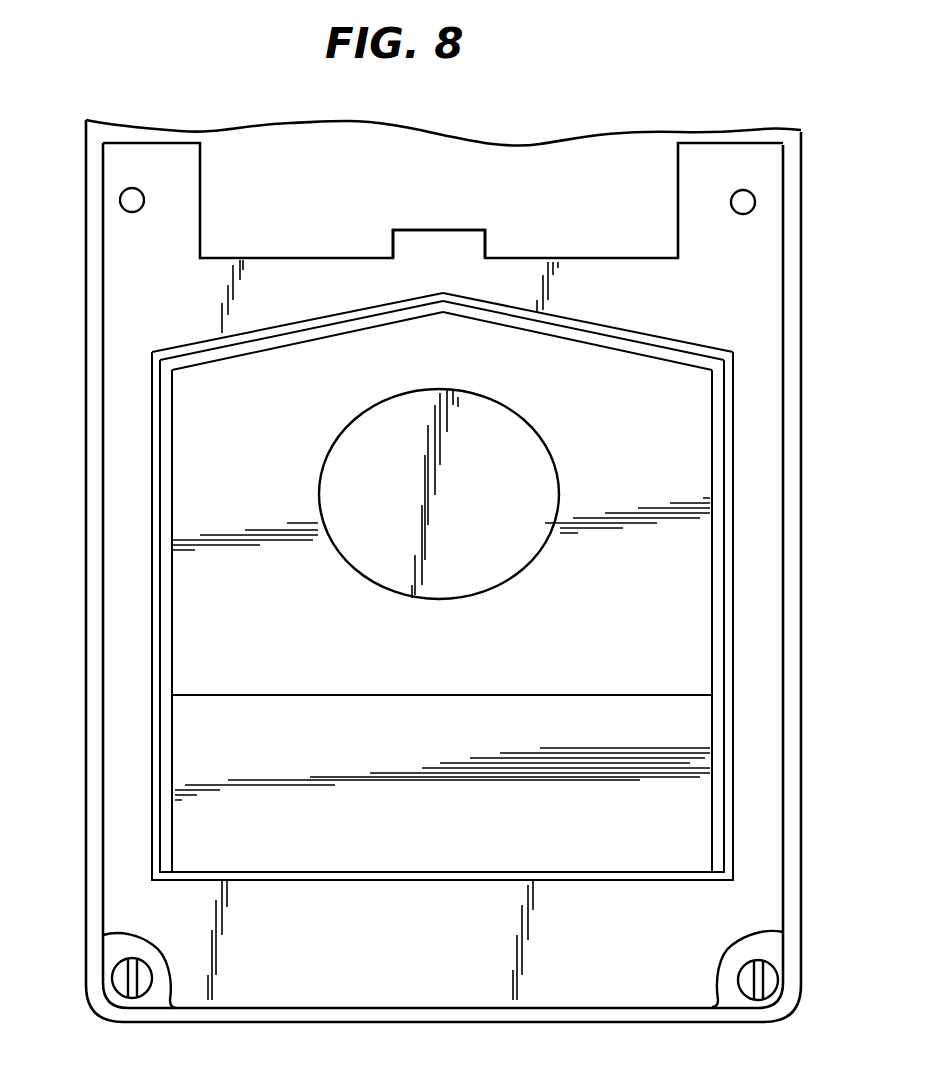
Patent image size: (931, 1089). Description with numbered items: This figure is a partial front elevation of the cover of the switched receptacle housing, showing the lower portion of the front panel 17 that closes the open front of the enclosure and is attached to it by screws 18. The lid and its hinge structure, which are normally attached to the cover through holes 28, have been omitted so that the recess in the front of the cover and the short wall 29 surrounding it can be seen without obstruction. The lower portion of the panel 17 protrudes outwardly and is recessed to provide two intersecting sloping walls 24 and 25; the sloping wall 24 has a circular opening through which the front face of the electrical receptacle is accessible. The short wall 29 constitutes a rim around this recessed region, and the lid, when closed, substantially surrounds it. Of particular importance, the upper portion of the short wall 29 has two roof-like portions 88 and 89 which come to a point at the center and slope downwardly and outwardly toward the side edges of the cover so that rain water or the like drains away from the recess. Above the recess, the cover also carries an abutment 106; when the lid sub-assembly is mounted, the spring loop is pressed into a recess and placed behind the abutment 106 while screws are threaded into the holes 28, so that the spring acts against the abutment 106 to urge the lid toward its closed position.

The front panel 17 is at (801, 412).
The screws 18 is at (774, 970).
The sloping wall 24 is at (192, 443).
The sloping wall 25 is at (192, 770).
The holes 28 is at (144, 200).
The short wall 29 is at (733, 675).
The roof-like portion 88 is at (302, 322).
The roof-like portion 89 is at (617, 327).
The abutment 106 is at (445, 228).